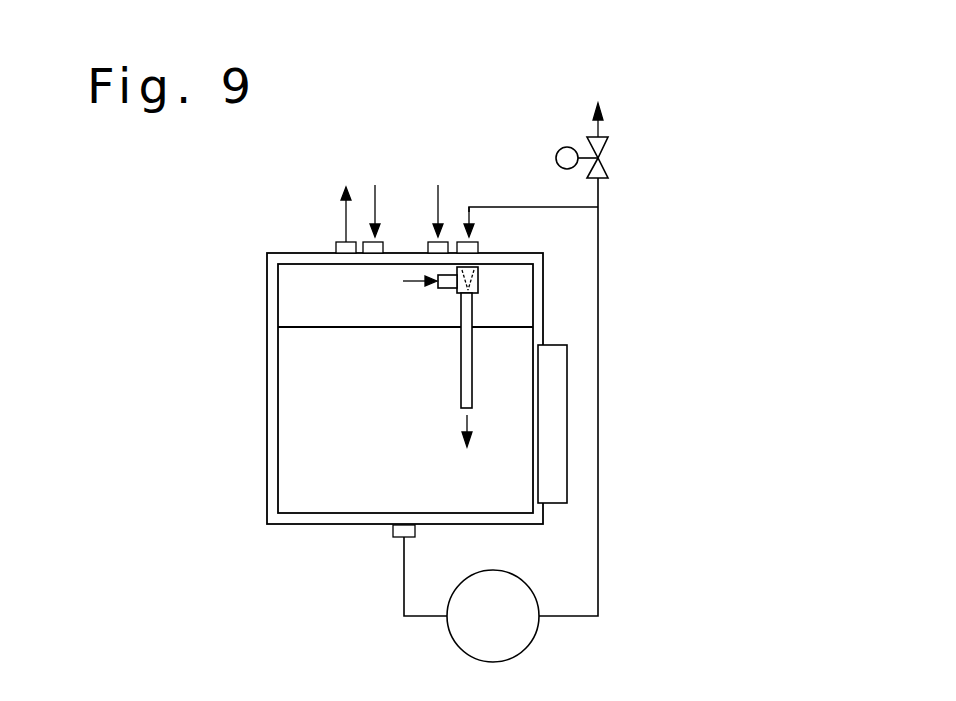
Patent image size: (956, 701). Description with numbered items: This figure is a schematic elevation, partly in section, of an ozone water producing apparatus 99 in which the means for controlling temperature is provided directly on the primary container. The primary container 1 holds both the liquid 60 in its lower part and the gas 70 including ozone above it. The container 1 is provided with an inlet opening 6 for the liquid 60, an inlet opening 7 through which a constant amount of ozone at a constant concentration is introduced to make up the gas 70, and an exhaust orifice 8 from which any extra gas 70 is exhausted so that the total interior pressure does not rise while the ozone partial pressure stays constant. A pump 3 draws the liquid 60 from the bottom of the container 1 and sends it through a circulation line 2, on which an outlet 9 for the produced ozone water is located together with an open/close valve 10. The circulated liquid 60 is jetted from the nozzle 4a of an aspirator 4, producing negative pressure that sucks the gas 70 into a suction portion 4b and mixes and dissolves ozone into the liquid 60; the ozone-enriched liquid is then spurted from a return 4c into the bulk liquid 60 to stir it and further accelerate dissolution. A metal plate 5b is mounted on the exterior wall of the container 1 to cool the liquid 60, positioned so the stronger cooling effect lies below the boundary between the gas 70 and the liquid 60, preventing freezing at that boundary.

The apparatus 99 is at (263, 251).
The primary container 1 is at (270, 378).
The gas 70 is at (282, 298).
The liquid 60 is at (283, 478).
The exhaust orifice 8 is at (334, 238).
The inlet opening for the gas 7 is at (385, 247).
The inlet opening for the liquid 6 is at (451, 247).
The nozzle 4a is at (478, 272).
The aspirator 4 is at (478, 290).
The suction portion 4b is at (450, 290).
The return 4c is at (465, 402).
The metal plate 5b is at (557, 410).
The circulation line 2 is at (600, 578).
The pump 3 is at (508, 627).
The open/close valve 10 is at (600, 165).
The outlet 9 is at (600, 125).